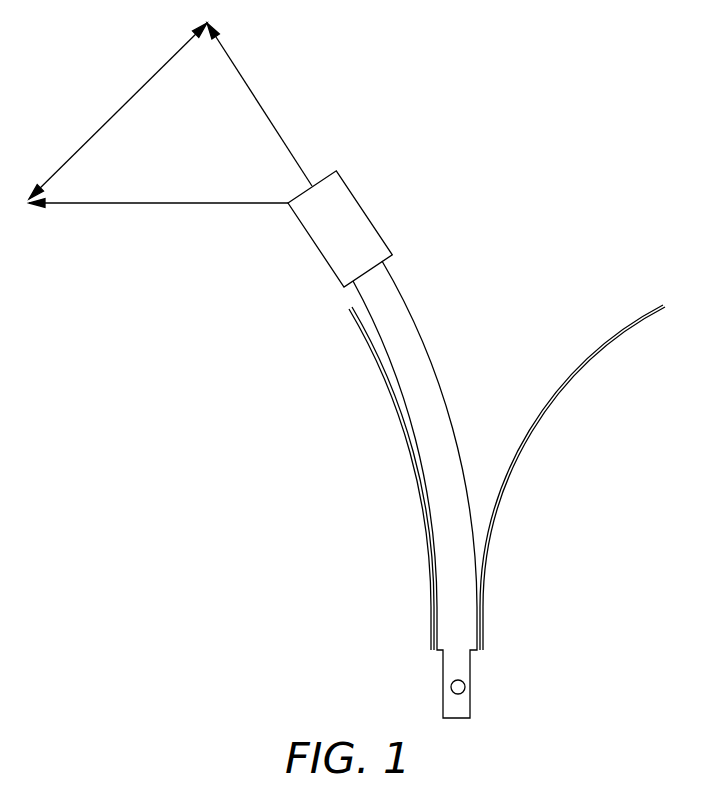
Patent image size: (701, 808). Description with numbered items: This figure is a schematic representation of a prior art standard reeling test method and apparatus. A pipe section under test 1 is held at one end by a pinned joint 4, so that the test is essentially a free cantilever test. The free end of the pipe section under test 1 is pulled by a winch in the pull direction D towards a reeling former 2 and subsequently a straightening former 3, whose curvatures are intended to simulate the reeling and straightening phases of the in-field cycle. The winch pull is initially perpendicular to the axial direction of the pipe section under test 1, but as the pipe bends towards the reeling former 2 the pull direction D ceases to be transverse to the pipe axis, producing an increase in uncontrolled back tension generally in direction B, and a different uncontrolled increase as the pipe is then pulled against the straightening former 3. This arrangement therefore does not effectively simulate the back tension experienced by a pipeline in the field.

The pipe section under test 1 is at (428, 345).
The reeling former 2 is at (523, 442).
The straightening former 3 is at (408, 415).
The pinned joint 4 is at (465, 687).
The back tension direction B is at (170, 111).
The pull direction D is at (158, 216).